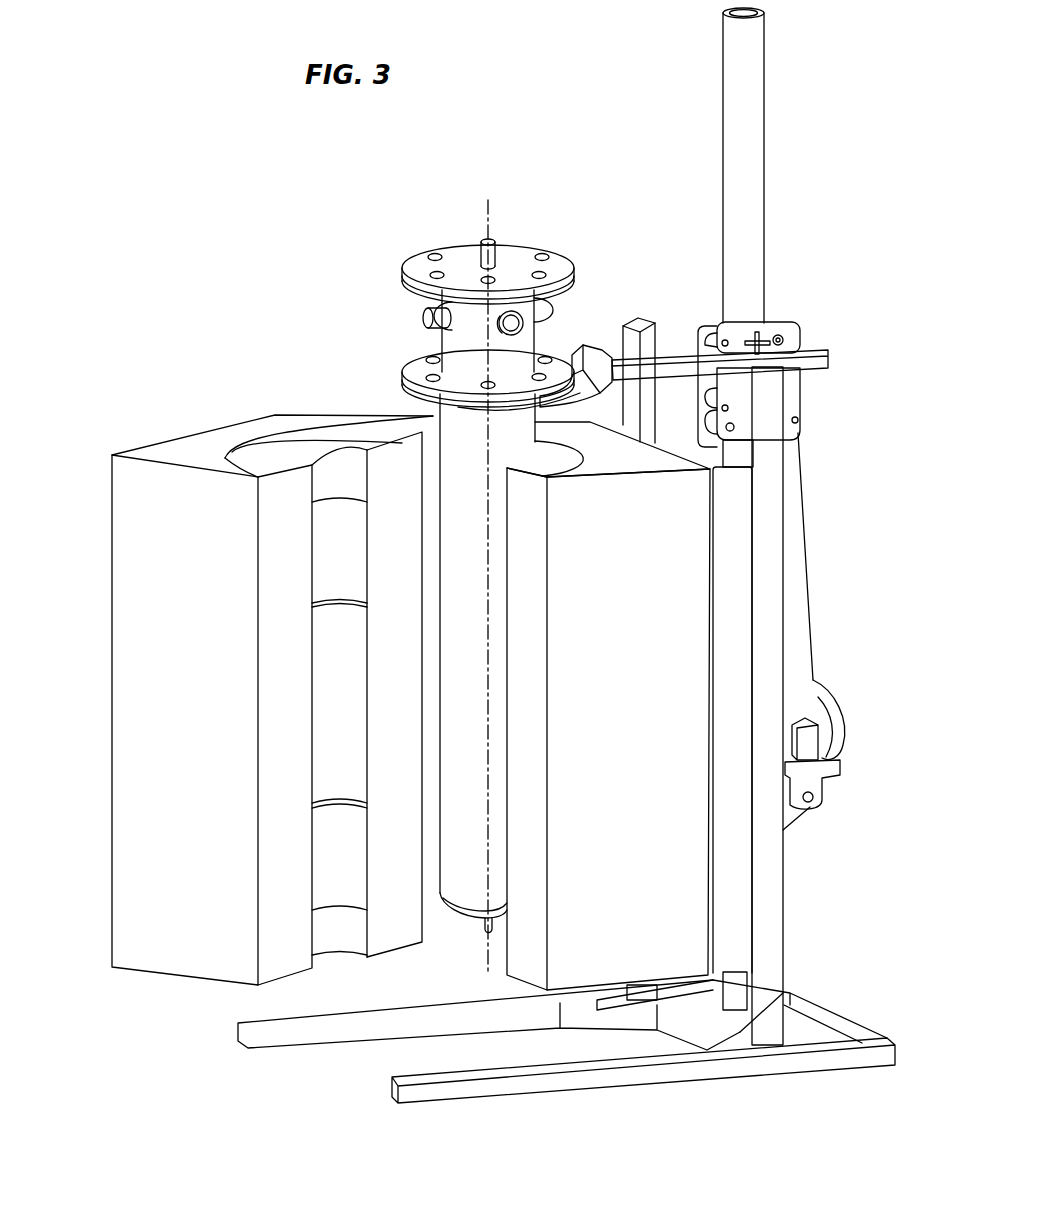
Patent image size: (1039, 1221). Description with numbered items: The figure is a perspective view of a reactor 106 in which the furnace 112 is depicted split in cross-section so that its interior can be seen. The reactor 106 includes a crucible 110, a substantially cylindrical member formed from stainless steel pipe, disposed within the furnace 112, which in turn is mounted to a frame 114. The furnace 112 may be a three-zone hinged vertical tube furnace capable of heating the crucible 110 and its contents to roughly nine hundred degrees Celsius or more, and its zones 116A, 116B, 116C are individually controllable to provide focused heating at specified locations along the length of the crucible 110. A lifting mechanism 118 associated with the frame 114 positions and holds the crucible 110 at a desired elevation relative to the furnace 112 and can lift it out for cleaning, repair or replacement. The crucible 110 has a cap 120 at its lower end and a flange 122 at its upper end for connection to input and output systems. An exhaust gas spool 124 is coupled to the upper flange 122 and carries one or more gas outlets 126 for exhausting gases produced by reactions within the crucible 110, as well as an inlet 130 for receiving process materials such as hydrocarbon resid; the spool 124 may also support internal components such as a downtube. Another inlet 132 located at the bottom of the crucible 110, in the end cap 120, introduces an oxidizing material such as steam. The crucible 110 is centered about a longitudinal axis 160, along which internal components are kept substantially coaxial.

The reactor 106 is at (188, 176).
The crucible 110 is at (438, 414).
The furnace 112 is at (205, 433).
The frame 114 is at (653, 318).
The zone 116A is at (337, 555).
The zone 116B is at (343, 712).
The zone 116C is at (337, 858).
The lifting mechanism 118 is at (825, 338).
The cap 120 is at (463, 917).
The flange 122 is at (405, 388).
The exhaust gas spool 124 is at (546, 335).
The gas outlets 126 is at (540, 305).
The inlet 130 is at (491, 240).
The inlet 132 is at (480, 922).
The longitudinal axis 160 is at (487, 225).